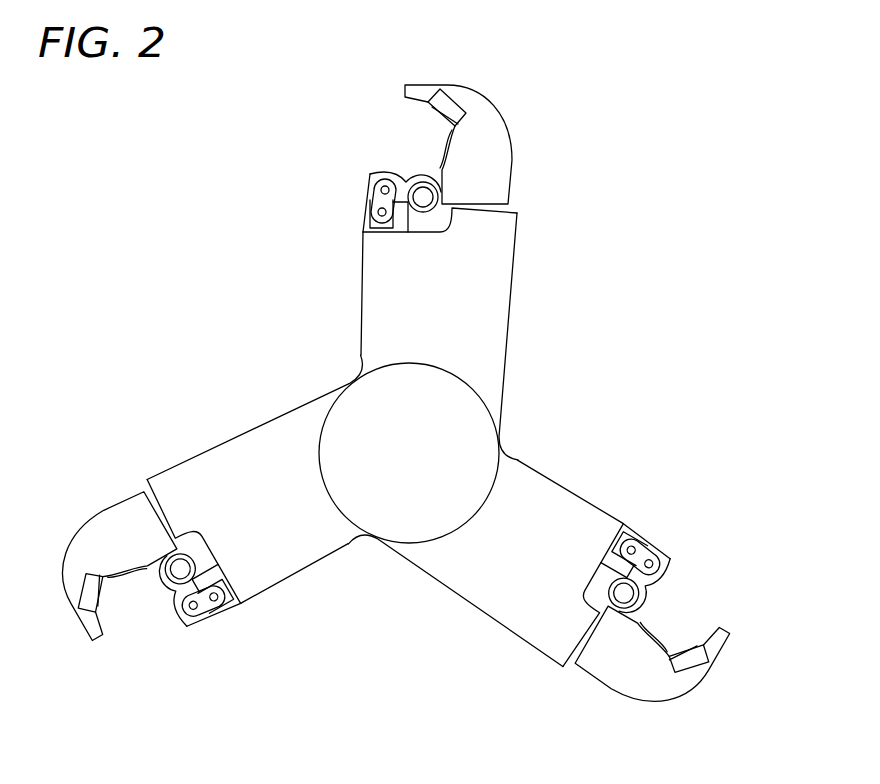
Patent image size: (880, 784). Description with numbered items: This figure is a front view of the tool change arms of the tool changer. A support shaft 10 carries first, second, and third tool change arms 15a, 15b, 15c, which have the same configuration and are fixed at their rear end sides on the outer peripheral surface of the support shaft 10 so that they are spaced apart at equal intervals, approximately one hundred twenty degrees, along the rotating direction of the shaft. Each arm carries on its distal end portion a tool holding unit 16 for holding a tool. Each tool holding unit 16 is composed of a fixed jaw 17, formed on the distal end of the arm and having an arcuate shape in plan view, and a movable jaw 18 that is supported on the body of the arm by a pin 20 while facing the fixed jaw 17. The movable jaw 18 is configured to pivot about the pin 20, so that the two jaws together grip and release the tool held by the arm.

The support shaft 10 is at (352, 400).
The first tool change arm 15a is at (518, 329).
The second tool change arm 15b is at (472, 621).
The third tool change arm 15c is at (246, 415).
The tool holding unit 16 is at (403, 137).
The fixed jaw 17 is at (495, 130).
The movable jaw 18 is at (385, 178).
The pin 20 is at (423, 197).